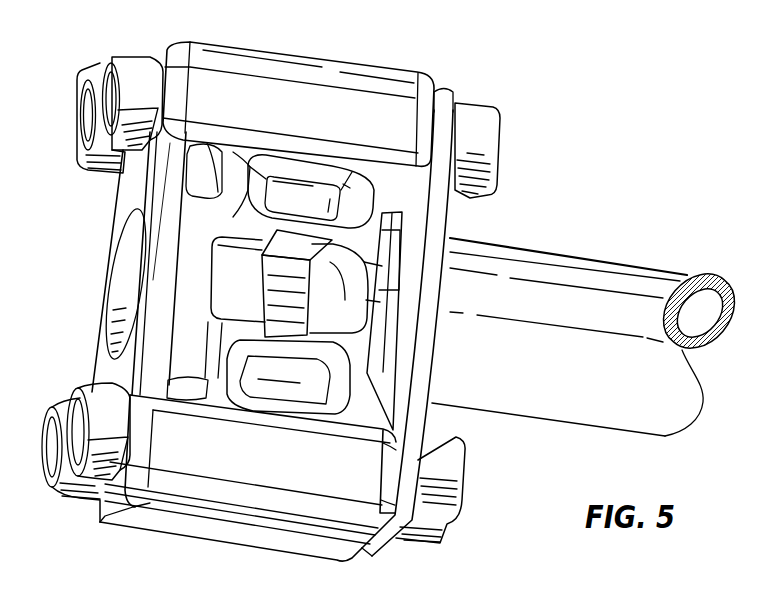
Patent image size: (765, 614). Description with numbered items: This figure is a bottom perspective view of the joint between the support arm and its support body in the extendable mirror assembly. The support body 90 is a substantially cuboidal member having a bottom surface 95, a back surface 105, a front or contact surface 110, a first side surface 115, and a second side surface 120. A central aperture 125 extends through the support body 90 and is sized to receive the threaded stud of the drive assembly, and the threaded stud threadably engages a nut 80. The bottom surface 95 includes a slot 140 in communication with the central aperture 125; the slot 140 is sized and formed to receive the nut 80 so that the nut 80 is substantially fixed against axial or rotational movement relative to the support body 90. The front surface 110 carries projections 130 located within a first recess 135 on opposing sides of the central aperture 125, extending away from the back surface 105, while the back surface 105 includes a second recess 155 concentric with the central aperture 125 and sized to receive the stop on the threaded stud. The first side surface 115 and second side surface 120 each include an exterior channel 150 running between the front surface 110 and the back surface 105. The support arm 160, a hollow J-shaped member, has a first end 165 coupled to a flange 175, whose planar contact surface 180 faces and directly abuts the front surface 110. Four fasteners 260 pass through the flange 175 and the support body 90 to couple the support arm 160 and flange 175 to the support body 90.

The nut 80 is at (277, 262).
The support body 90 is at (428, 574).
The bottom surface 95 is at (350, 116).
The back surface 105 is at (130, 188).
The front surface 110 is at (404, 470).
The first side surface 115 is at (261, 47).
The second side surface 120 is at (204, 541).
The central aperture 125 is at (118, 282).
The projections 130 is at (386, 319).
The first recess 135 is at (422, 226).
The slot 140 is at (311, 232).
The exterior channel 150 is at (138, 522).
The second recess 155 is at (127, 268).
The support arm 160 is at (678, 272).
The first end 165 is at (634, 224).
The flange 175 is at (449, 89).
The contact surface 180 is at (385, 363).
The fasteners 260 is at (488, 110).